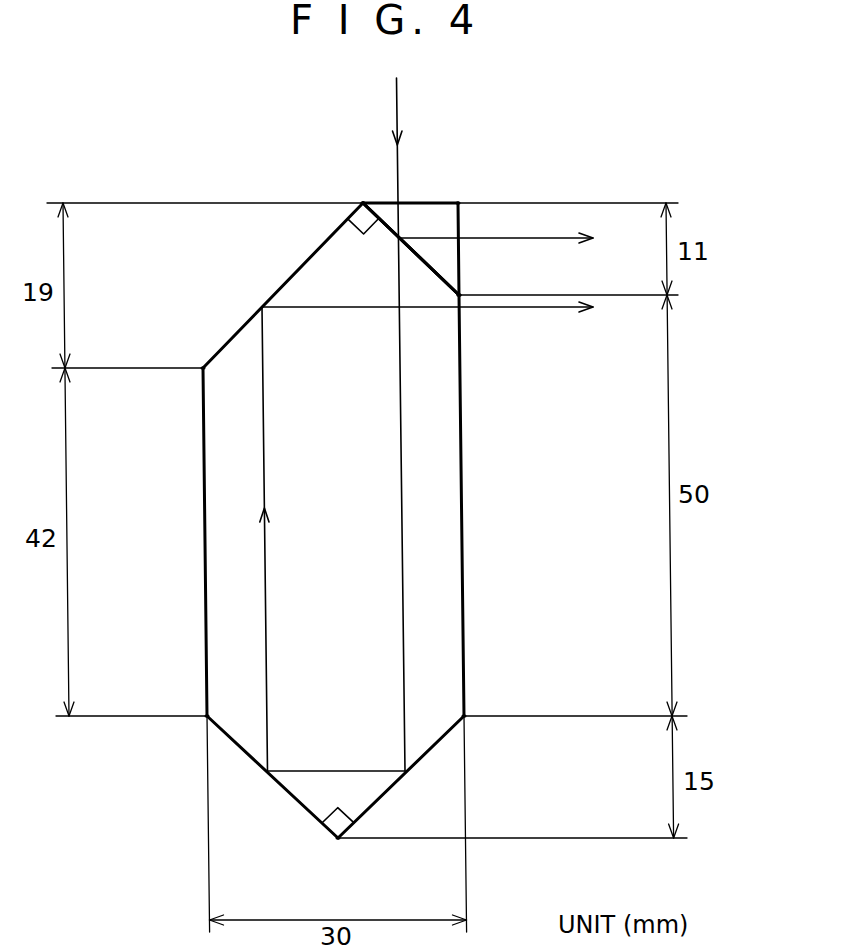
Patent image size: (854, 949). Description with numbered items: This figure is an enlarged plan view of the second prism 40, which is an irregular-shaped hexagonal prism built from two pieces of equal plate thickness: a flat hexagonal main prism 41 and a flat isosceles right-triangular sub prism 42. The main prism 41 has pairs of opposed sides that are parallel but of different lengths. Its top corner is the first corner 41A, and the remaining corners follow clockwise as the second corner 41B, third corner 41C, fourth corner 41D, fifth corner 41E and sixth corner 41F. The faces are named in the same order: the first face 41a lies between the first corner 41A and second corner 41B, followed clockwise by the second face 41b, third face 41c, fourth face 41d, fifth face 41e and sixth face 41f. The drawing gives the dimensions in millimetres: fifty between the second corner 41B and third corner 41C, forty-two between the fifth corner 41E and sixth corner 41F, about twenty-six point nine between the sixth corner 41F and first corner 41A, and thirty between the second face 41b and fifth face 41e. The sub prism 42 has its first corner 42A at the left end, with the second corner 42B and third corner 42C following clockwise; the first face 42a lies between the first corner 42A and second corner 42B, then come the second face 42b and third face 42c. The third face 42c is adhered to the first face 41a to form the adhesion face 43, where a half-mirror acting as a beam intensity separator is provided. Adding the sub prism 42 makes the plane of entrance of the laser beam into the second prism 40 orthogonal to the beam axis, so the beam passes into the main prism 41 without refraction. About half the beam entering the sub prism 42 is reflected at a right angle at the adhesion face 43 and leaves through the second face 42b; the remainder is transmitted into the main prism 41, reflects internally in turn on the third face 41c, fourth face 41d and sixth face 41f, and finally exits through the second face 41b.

The second prism 40 is at (513, 190).
The main prism 41 is at (432, 418).
The first face 41a is at (390, 223).
The second face 41b is at (462, 484).
The third face 41c is at (386, 790).
The fourth face 41d is at (291, 797).
The fifth face 41e is at (205, 524).
The sixth face 41f is at (280, 289).
The first corner 41A is at (363, 203).
The second corner 41B is at (459, 295).
The third corner 41C is at (464, 716).
The fourth corner 41D is at (338, 841).
The fifth corner 41E is at (207, 716).
The sixth corner 41F is at (203, 368).
The sub prism 42 is at (430, 213).
The first face 42a is at (409, 198).
The second face 42b is at (460, 222).
The third face 42c is at (428, 266).
The first corner 42A is at (316, 162).
The second corner 42B is at (458, 203).
The third corner 42C is at (541, 275).
The adhesion face 43 is at (402, 190).